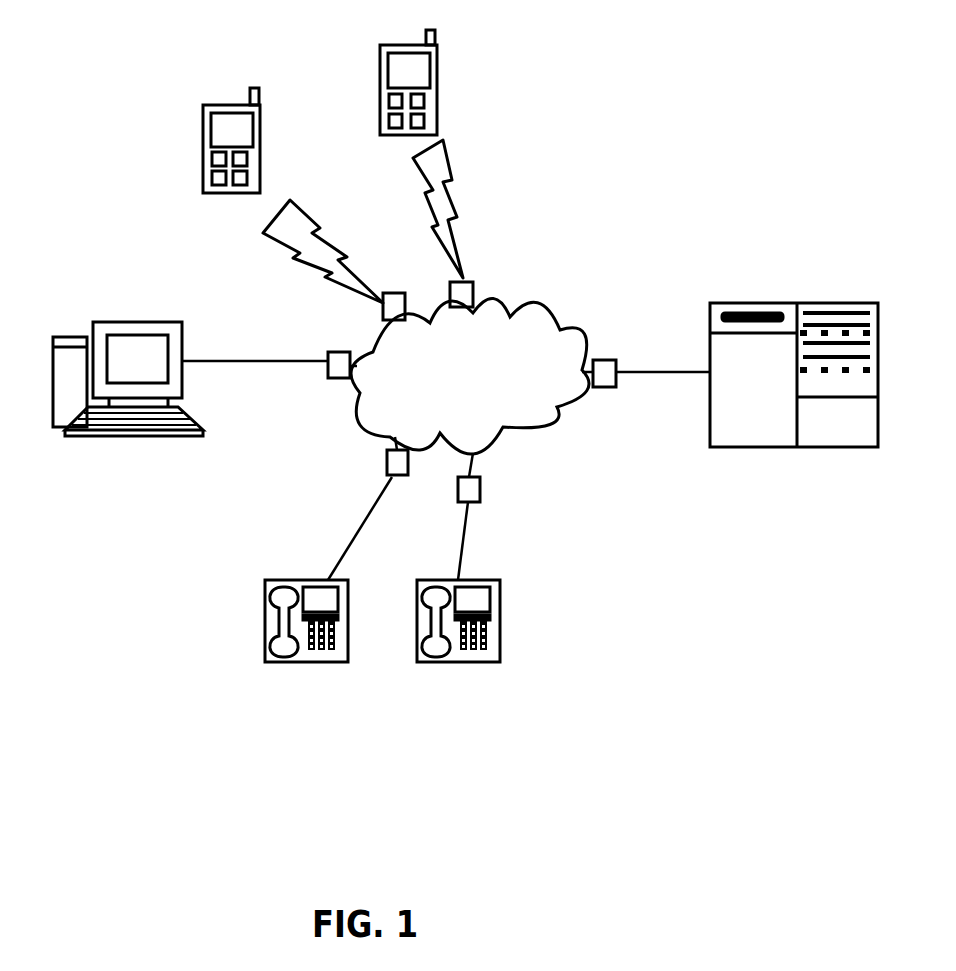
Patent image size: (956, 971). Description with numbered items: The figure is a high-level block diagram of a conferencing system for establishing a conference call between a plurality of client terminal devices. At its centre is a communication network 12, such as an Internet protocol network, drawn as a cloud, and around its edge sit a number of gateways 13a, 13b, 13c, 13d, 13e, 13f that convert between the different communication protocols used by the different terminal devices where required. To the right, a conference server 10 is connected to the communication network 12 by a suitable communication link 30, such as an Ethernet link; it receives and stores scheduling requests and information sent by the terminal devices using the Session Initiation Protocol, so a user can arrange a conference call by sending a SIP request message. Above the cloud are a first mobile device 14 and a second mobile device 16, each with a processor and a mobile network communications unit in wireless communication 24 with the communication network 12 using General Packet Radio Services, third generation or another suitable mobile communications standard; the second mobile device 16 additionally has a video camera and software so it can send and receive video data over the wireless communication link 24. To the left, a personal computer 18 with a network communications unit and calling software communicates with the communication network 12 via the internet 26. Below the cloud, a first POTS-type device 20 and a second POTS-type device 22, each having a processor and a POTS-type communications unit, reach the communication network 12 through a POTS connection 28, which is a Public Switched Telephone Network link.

The conference server 10 is at (762, 449).
The communication network 12 is at (533, 305).
The gateway 13a is at (393, 293).
The gateway 13b is at (468, 282).
The gateway 13c is at (598, 360).
The gateway 13d is at (480, 492).
The gateway 13e is at (398, 478).
The gateway 13f is at (328, 356).
The first mobile device 14 is at (380, 87).
The second mobile device 16 is at (203, 167).
The personal computer 18 is at (112, 436).
The first POTS-type device 20 is at (283, 664).
The second POTS-type device 22 is at (450, 664).
The wireless communication link 24 is at (431, 192).
The internet 26 is at (238, 362).
The POTS connection 28 is at (370, 483).
The communication link 30 is at (653, 371).